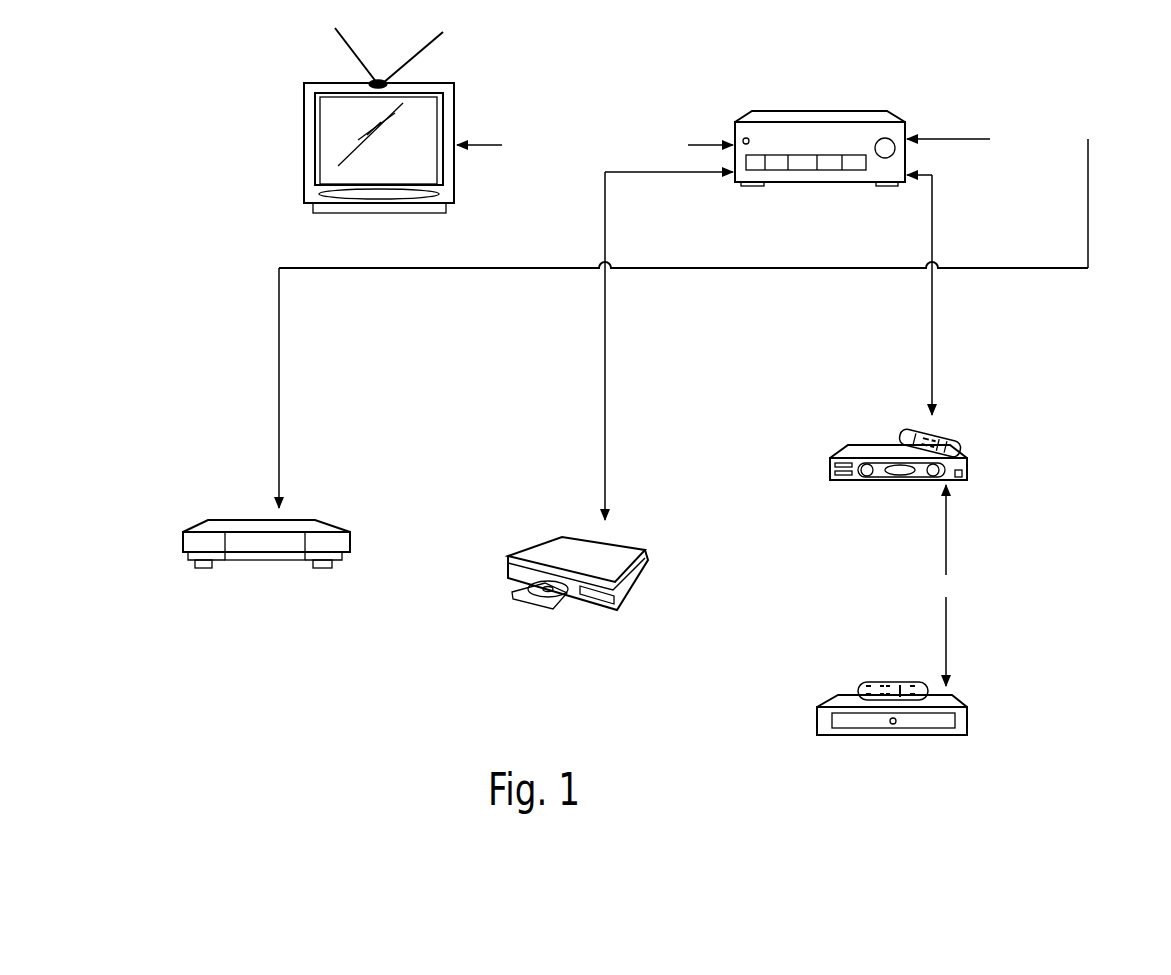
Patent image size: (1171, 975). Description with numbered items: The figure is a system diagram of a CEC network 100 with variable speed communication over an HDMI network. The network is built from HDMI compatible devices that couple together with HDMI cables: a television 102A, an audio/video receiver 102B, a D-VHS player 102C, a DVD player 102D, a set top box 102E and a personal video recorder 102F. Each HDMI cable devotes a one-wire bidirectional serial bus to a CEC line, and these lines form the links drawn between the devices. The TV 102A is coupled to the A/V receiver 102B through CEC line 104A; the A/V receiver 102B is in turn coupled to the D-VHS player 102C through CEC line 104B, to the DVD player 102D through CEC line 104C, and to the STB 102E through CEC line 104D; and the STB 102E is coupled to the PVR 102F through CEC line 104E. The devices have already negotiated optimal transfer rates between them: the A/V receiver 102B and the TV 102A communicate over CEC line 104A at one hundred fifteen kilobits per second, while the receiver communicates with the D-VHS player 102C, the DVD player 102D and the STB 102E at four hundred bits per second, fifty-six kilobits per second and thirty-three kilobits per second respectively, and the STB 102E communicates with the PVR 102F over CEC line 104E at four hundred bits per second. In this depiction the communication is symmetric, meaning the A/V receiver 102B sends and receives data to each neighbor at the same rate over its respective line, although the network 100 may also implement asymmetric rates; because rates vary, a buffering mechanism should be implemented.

The CEC network 100 is at (231, 140).
The television (TV) 102A is at (435, 82).
The audio/video (A/V) receiver 102B is at (817, 111).
The digital-video home system (D-VHS) player 102C is at (308, 522).
The digital video disk (DVD) player 102D is at (633, 545).
The set top box (STB) 102E is at (952, 437).
The personal video recorder (PVR) 102F is at (957, 697).
The CEC line 104A is at (594, 133).
The CEC line 104B is at (279, 375).
The CEC line 104C is at (605, 372).
The CEC line 104D is at (932, 352).
The CEC line 104E is at (946, 632).